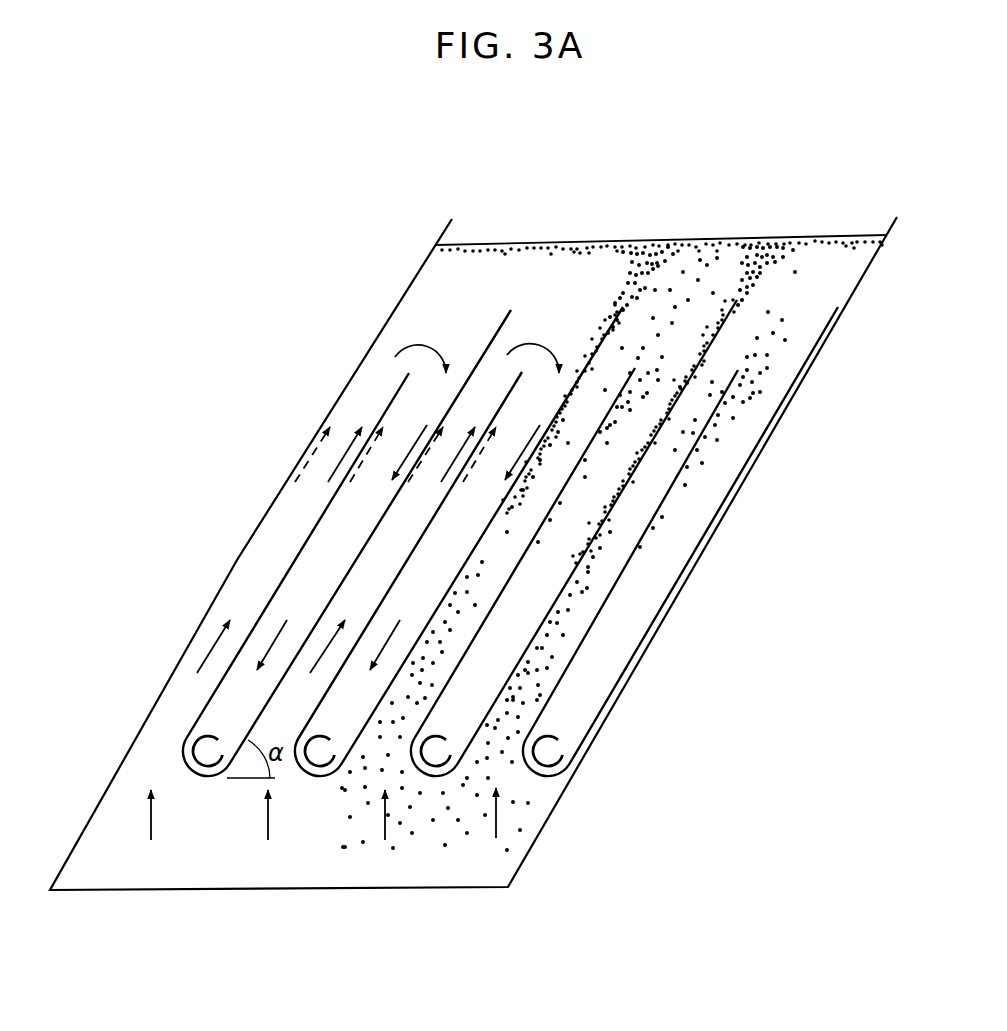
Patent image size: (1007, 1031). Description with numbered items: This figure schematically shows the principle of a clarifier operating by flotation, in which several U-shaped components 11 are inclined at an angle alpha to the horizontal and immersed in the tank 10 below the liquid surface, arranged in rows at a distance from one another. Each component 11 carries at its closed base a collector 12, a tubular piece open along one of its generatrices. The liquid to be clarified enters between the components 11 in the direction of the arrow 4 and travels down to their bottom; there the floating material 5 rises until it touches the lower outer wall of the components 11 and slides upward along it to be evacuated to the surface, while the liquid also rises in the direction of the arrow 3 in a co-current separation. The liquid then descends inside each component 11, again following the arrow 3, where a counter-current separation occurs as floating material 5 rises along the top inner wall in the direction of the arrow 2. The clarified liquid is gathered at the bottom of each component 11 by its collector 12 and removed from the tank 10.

The arrow 2 is at (389, 469).
The arrow 3 is at (408, 507).
The arrow 4 is at (324, 747).
The floating material 5 is at (343, 845).
The tank 10 is at (537, 847).
The U-shaped component 11 is at (313, 789).
The collector 12 is at (563, 751).